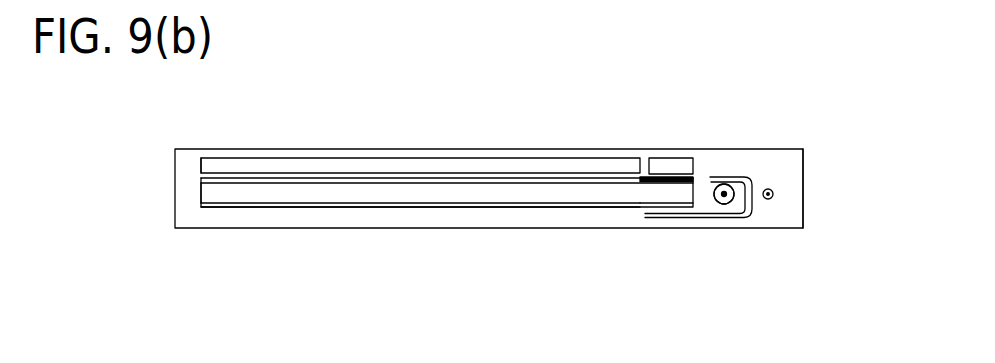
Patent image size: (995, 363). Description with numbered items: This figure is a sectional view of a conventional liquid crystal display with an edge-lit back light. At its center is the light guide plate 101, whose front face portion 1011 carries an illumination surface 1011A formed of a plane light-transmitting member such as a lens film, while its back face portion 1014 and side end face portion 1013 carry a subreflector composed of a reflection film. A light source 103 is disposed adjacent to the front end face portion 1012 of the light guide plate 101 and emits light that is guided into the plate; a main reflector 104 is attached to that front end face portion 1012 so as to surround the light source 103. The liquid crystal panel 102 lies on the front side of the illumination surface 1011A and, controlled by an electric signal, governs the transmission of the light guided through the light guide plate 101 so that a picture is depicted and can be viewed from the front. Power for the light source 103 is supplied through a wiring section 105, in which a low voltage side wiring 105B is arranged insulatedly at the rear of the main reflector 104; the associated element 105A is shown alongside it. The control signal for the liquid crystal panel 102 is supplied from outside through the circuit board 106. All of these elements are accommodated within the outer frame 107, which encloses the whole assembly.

The light guide plate 101 is at (557, 198).
The front face portion 1011 is at (303, 178).
The illumination surface 1011A is at (383, 178).
The front end face portion 1012 is at (646, 192).
The side end face portion 1013 is at (199, 193).
The back face portion 1014 is at (438, 209).
The liquid crystal panel 102 is at (463, 165).
The light source 103 is at (722, 196).
The main reflector 104 is at (740, 172).
The wiring section 105 is at (798, 238).
The electrode terminal 105A is at (728, 203).
The low voltage side wiring 105B is at (768, 199).
The circuit board 106 is at (672, 167).
The outer frame 107 is at (800, 158).